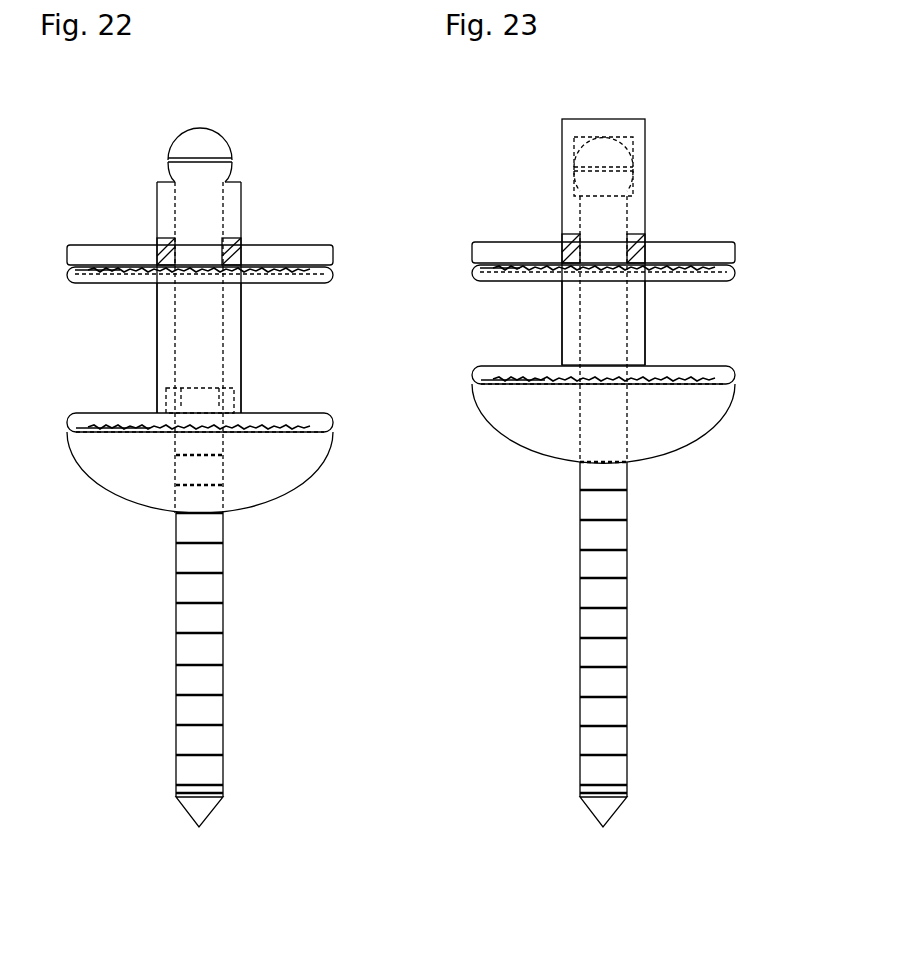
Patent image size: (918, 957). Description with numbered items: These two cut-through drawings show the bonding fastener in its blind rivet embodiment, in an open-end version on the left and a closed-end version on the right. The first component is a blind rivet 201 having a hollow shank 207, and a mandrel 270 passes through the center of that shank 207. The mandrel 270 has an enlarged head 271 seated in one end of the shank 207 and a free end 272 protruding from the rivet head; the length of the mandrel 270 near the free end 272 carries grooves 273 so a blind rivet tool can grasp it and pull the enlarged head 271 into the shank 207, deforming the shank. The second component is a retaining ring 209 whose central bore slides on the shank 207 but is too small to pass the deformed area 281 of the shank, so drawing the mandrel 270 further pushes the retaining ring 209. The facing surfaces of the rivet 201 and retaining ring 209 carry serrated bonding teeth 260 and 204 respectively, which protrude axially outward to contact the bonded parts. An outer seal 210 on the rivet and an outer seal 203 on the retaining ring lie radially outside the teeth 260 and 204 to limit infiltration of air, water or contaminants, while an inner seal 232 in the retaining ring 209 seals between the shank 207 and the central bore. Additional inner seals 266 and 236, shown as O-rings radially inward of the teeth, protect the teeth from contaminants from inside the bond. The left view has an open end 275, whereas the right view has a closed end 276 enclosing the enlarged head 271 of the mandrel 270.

In FIG. 22, the blind rivet 201 is at (275, 475).
In FIG. 23, the blind rivet 201 is at (673, 420).
In FIG. 22, the outer seal 203 is at (318, 273).
In FIG. 23, the outer seal 203 is at (718, 270).
In FIG. 22, the serrated bonding teeth 204 is at (122, 272).
In FIG. 23, the serrated bonding teeth 204 is at (522, 272).
In FIG. 22, the shank 207 is at (237, 335).
In FIG. 23, the shank 207 is at (638, 313).
In FIG. 22, the retaining ring 209 is at (322, 248).
In FIG. 23, the retaining ring 209 is at (725, 247).
In FIG. 22, the outer seal 210 is at (317, 420).
In FIG. 23, the outer seal 210 is at (717, 377).
In FIG. 22, the inner seal 232 is at (158, 257).
In FIG. 23, the inner seal 232 is at (562, 247).
In FIG. 22, the additional inner seal 236 is at (243, 272).
In FIG. 23, the additional inner seal 236 is at (648, 273).
In FIG. 22, the serrated bonding teeth 260 is at (280, 425).
In FIG. 23, the serrated bonding teeth 260 is at (697, 377).
In FIG. 22, the additional inner seal 266 is at (152, 428).
In FIG. 23, the additional inner seal 266 is at (547, 382).
In FIG. 22, the mandrel 270 is at (217, 613).
In FIG. 23, the mandrel 270 is at (610, 585).
In FIG. 22, the enlarged head 271 is at (205, 133).
In FIG. 23, the enlarged head 271 is at (620, 155).
In FIG. 22, the free end 272 is at (207, 820).
In FIG. 23, the free end 272 is at (610, 820).
In FIG. 22, the grooves 273 is at (176, 755).
In FIG. 23, the grooves 273 is at (580, 752).
In FIG. 22, the open end 275 is at (158, 182).
In FIG. 23, the closed end 276 is at (570, 132).
In FIG. 22, the deformed area of shank 281 is at (168, 207).
In FIG. 23, the deformed area of shank 281 is at (568, 207).